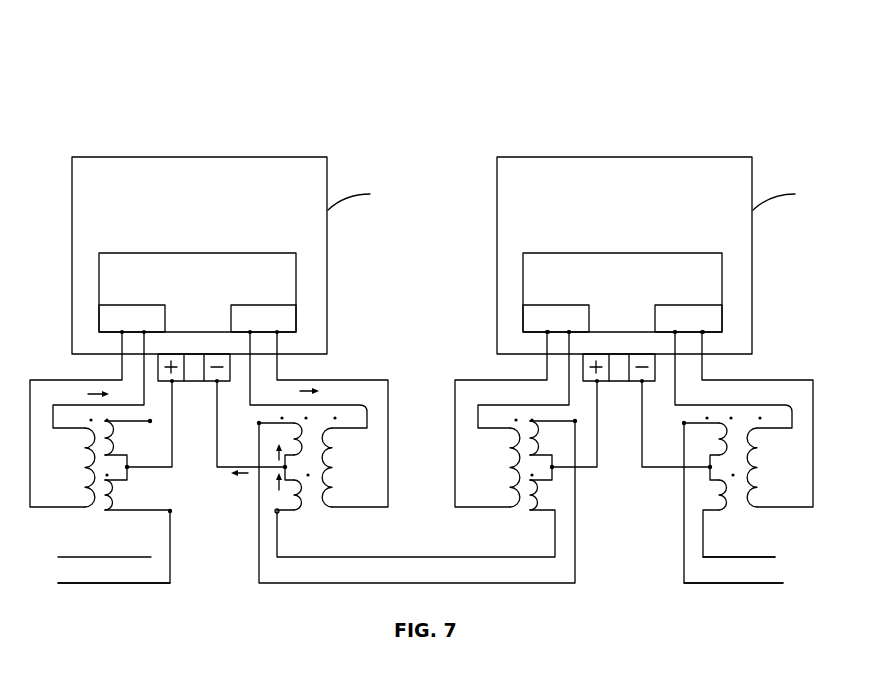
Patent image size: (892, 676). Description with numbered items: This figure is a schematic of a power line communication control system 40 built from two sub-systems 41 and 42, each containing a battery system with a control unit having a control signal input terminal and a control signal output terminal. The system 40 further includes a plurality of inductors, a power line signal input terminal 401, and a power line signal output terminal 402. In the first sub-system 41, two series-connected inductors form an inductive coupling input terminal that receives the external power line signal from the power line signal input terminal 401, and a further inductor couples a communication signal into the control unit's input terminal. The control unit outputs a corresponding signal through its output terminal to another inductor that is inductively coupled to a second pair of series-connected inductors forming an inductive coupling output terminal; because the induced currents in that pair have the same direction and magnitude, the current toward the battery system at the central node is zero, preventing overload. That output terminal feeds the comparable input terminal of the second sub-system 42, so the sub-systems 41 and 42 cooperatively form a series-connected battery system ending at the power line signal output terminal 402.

The power line communication control system 40 is at (439, 66).
The sub-system 41 is at (357, 303).
The sub-system 42 is at (770, 282).
The power line signal input terminal 401 is at (98, 570).
The power line signal output terminal 402 is at (750, 570).